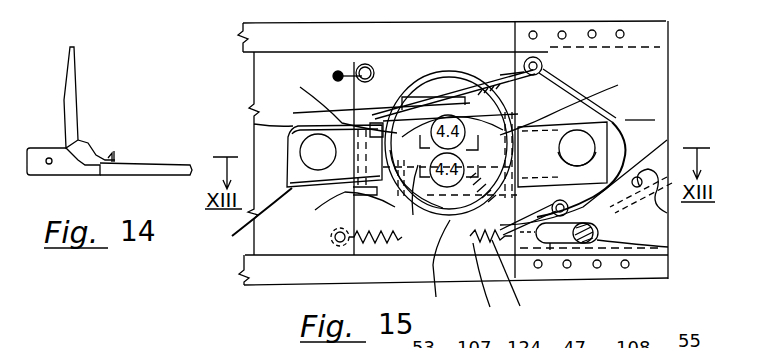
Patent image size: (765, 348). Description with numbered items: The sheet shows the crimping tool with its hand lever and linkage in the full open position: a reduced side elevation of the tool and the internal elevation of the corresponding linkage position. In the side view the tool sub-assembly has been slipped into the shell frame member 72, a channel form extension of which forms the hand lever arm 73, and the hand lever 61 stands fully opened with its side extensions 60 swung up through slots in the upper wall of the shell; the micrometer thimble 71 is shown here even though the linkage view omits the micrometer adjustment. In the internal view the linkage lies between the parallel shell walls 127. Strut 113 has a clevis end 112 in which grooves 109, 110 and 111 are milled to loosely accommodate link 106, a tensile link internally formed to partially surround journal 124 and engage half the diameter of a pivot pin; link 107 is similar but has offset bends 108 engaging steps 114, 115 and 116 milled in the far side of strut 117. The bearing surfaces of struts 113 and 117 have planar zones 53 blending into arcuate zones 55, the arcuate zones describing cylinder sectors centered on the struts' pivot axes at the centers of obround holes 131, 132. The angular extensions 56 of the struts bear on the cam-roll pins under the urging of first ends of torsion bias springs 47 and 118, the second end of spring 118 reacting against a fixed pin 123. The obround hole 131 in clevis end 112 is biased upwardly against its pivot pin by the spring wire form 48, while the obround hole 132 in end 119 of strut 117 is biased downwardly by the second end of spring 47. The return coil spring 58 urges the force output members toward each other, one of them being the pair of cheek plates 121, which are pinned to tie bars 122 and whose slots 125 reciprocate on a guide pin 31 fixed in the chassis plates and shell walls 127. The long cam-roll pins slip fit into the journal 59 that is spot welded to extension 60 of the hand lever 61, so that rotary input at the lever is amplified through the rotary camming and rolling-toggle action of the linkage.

In FIG. 14, the hand lever 61 is at (77, 75).
In FIG. 14, the hand lever side extensions 60 is at (88, 138).
In FIG. 14, the micrometer thimble 71 is at (114, 152).
In FIG. 14, the shell frame member 72 is at (52, 175).
In FIG. 14, the hand lever arm 73 is at (140, 177).
In FIG. 15, the guide pin 31 is at (620, 247).
In FIG. 15, the torsion bias spring 47 is at (473, 83).
In FIG. 15, the spring wire form 48 is at (375, 62).
In FIG. 15, the planar zones 53 is at (454, 102).
In FIG. 15, the arcuate zones 55 is at (544, 183).
In FIG. 15, the angular extensions 56 is at (423, 110).
In FIG. 15, the return coil spring 58 is at (376, 240).
In FIG. 15, the journal 59 is at (427, 60).
In FIG. 15, the link 106 is at (383, 255).
In FIG. 15, the link 107 is at (453, 83).
In FIG. 15, the offset bends 108 is at (572, 70).
In FIG. 15, the groove 109 is at (330, 187).
In FIG. 15, the groove 110 is at (352, 127).
In FIG. 15, the groove 111 is at (315, 210).
In FIG. 15, the clevis end 112 is at (254, 222).
In FIG. 15, the strut 113 is at (247, 292).
In FIG. 15, the step 114 is at (500, 120).
In FIG. 15, the step 115 is at (517, 163).
In FIG. 15, the step 116 is at (675, 243).
In FIG. 15, the strut 117 is at (550, 165).
In FIG. 15, the torsion bias spring 118 is at (548, 246).
In FIG. 15, the end of strut 119 is at (662, 142).
In FIG. 15, the cheek plates 121 is at (620, 153).
In FIG. 15, the tie bars 122 is at (243, 33).
In FIG. 15, the fixed pin 123 is at (600, 207).
In FIG. 15, the journal 124 is at (460, 250).
In FIG. 15, the slots 125 is at (565, 273).
In FIG. 15, the shell walls 127 is at (250, 20).
In FIG. 15, the obround hole 131 is at (254, 124).
In FIG. 15, the obround hole 132 is at (583, 197).